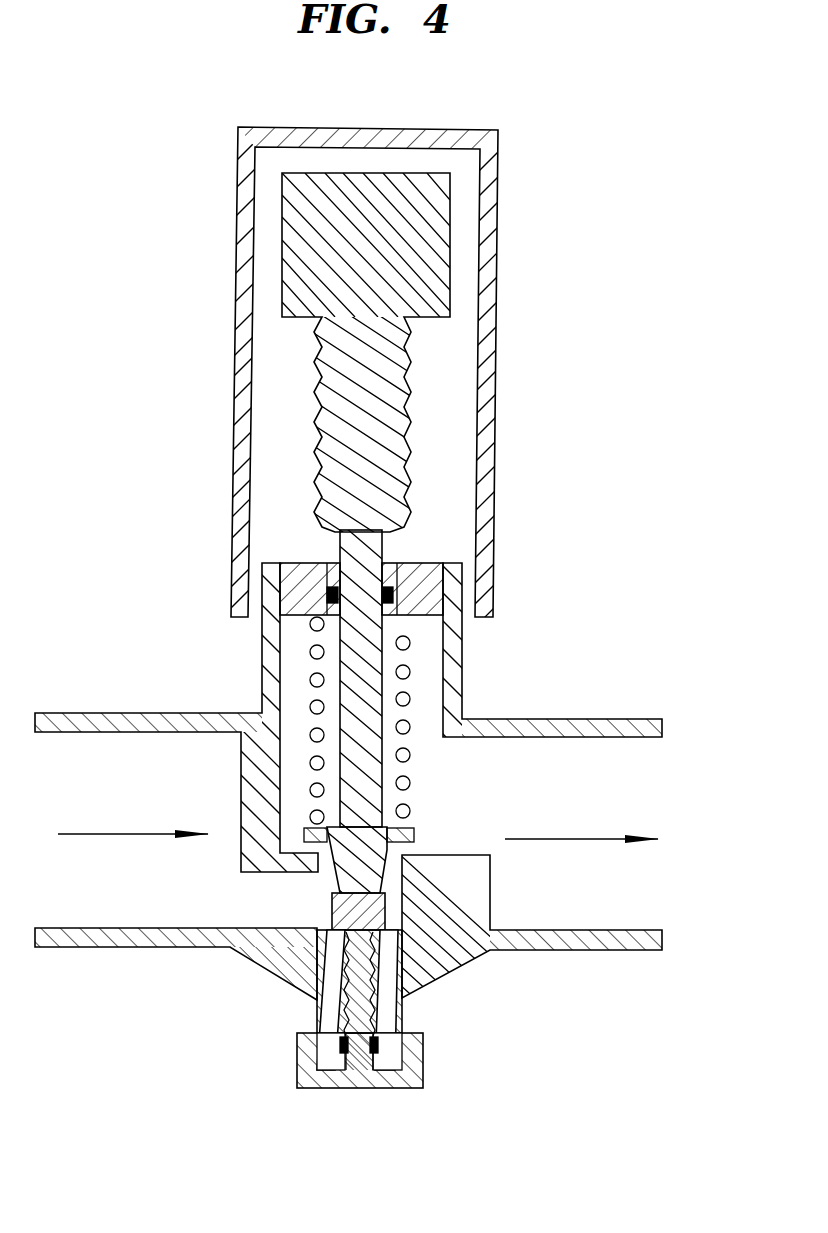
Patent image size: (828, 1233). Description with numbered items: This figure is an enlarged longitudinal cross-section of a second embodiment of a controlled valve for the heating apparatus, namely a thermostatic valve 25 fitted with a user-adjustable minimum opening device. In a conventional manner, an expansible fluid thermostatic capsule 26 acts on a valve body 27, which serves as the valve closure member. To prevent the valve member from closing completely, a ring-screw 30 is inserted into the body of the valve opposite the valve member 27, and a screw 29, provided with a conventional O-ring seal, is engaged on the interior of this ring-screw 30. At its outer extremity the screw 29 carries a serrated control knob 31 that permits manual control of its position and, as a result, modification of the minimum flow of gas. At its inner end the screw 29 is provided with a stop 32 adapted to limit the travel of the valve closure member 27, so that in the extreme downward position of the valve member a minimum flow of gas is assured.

The thermostatic valve 25 is at (548, 458).
The expansible fluid thermostatic capsule 26 is at (387, 388).
The valve body 27 is at (377, 843).
The screw 29 is at (358, 1008).
The ring-screw 30 is at (393, 1020).
The serrated control knob 31 is at (397, 1080).
The stop 32 is at (348, 910).